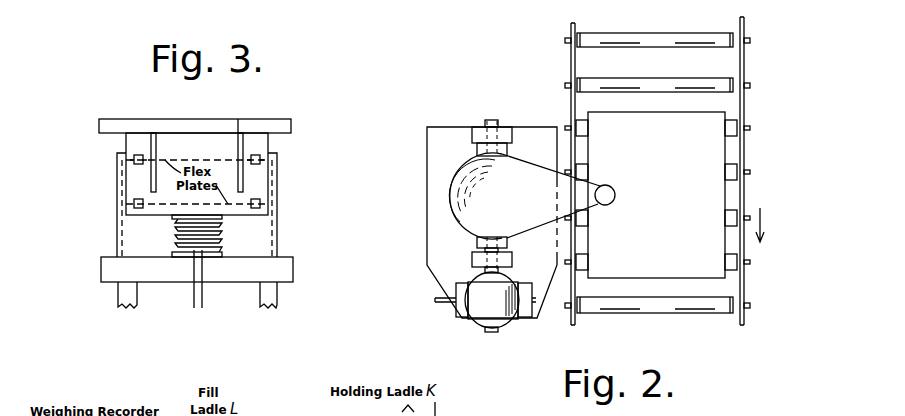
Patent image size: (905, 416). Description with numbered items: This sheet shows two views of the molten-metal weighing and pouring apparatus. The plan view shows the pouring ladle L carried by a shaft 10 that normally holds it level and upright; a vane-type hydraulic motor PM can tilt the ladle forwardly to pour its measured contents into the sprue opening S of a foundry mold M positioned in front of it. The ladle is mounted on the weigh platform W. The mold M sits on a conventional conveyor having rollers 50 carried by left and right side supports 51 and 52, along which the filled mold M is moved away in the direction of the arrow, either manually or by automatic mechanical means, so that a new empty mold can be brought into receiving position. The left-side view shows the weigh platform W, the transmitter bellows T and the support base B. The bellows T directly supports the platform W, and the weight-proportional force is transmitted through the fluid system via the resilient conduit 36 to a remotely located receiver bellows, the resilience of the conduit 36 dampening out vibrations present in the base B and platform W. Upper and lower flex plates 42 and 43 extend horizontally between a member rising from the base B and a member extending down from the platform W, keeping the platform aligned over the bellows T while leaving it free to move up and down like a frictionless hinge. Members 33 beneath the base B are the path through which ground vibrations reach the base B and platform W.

In FIG. 3, the weigh platform W is at (99, 127).
In FIG. 2, the weigh platform W is at (427, 213).
In FIG. 3, the upper flex plate 42 is at (215, 160).
In FIG. 3, the lower flex plate 43 is at (238, 204).
In FIG. 3, the transmitter bellows T is at (175, 234).
In FIG. 3, the conduit 36 is at (194, 297).
In FIG. 3, the support base B is at (101, 268).
In FIG. 3, the members 33 is at (118, 298).
In FIG. 2, the shaft 10 is at (492, 120).
In FIG. 2, the pouring ladle L is at (462, 170).
In FIG. 2, the vane-type hydraulic motor PM is at (482, 312).
In FIG. 2, the sprue opening S is at (613, 190).
In FIG. 2, the left side support 51 is at (571, 27).
In FIG. 2, the right side support 52 is at (744, 110).
In FIG. 2, the rollers 50 is at (683, 78).
In FIG. 2, the mold M is at (725, 198).